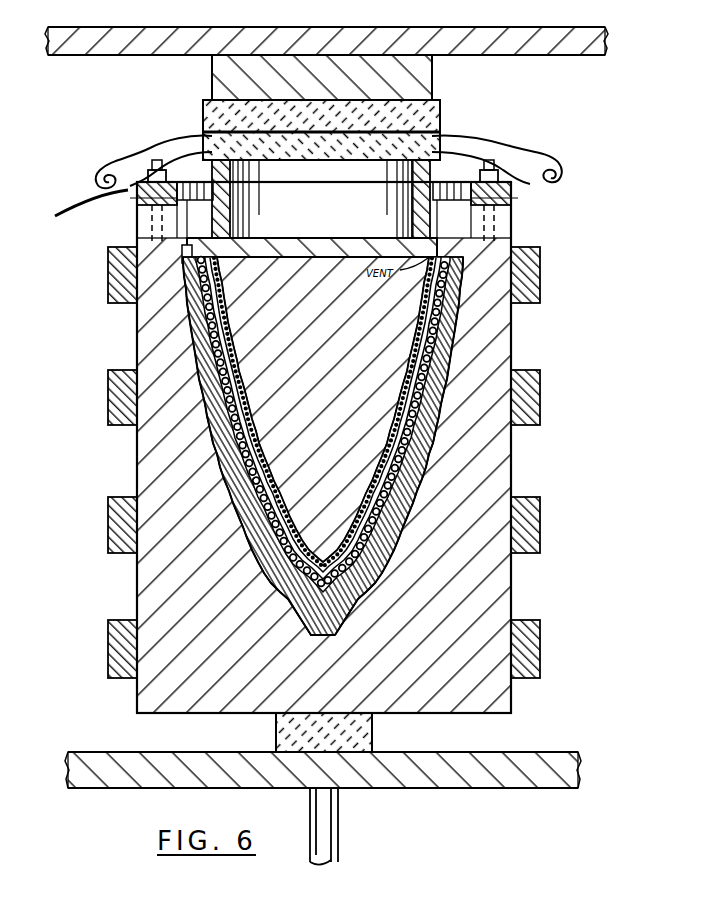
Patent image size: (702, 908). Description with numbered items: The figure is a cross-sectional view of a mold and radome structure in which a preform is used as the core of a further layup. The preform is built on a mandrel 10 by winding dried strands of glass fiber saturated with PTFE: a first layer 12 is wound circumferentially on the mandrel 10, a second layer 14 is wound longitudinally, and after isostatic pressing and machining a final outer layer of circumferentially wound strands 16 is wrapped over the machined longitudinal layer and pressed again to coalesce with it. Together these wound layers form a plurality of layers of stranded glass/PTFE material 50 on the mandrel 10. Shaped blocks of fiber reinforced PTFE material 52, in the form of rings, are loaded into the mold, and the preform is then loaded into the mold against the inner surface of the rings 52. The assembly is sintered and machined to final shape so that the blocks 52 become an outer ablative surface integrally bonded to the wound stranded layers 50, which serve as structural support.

The mandrel 10 is at (385, 370).
The first layer 12 is at (247, 429).
The second layer 14 is at (262, 470).
The final outer layer of circumferentially wound strands 16 is at (267, 530).
The plurality of layers of stranded glass/PTFE material 50 is at (432, 435).
The shaped blocks of fiber reinforced PTFE material 52 is at (425, 463).